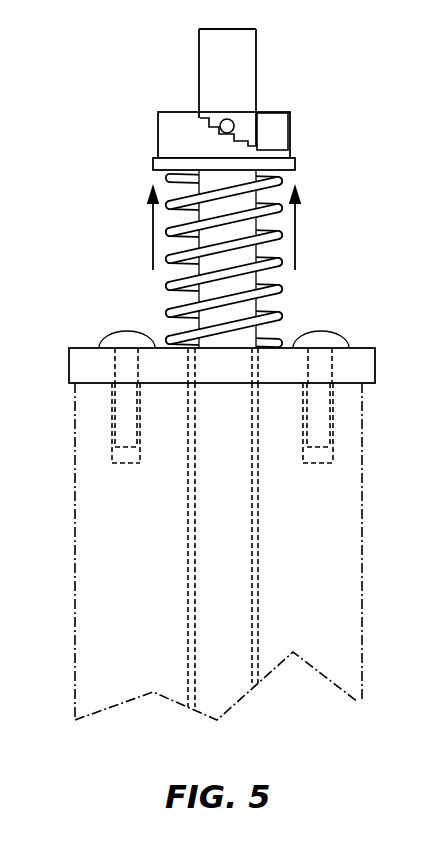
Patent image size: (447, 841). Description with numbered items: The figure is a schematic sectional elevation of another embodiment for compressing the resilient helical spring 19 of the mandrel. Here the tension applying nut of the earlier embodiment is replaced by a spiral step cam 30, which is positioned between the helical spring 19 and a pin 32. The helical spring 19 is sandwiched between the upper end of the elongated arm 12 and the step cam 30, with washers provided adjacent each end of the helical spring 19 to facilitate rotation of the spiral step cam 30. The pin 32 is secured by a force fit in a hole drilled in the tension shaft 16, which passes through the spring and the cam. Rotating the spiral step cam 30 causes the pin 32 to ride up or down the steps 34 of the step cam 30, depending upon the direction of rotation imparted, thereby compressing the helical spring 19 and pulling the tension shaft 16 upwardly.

The elongated arm 12 is at (73, 553).
The tension shaft 16 is at (208, 55).
The resilient helical spring 19 is at (272, 288).
The spiral step cam 30 is at (272, 110).
The pin 32 is at (223, 120).
The steps 34 is at (245, 133).